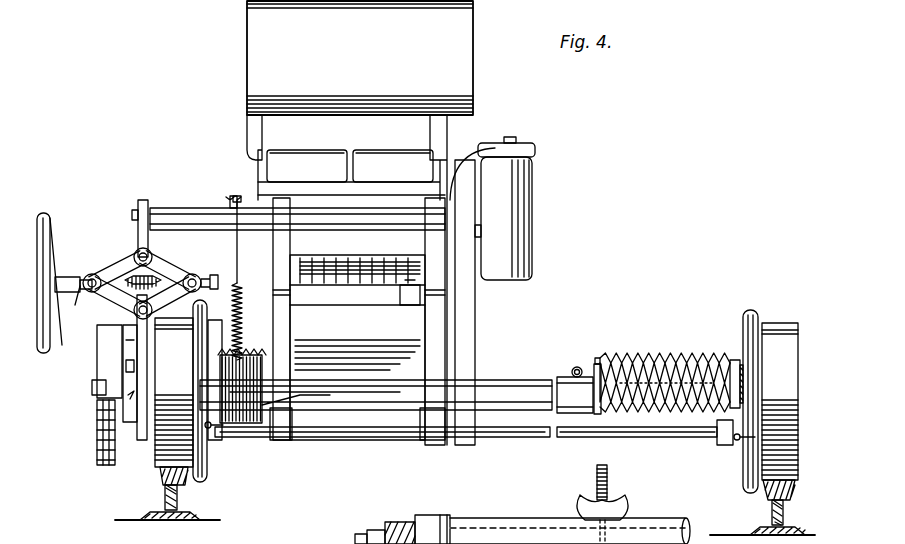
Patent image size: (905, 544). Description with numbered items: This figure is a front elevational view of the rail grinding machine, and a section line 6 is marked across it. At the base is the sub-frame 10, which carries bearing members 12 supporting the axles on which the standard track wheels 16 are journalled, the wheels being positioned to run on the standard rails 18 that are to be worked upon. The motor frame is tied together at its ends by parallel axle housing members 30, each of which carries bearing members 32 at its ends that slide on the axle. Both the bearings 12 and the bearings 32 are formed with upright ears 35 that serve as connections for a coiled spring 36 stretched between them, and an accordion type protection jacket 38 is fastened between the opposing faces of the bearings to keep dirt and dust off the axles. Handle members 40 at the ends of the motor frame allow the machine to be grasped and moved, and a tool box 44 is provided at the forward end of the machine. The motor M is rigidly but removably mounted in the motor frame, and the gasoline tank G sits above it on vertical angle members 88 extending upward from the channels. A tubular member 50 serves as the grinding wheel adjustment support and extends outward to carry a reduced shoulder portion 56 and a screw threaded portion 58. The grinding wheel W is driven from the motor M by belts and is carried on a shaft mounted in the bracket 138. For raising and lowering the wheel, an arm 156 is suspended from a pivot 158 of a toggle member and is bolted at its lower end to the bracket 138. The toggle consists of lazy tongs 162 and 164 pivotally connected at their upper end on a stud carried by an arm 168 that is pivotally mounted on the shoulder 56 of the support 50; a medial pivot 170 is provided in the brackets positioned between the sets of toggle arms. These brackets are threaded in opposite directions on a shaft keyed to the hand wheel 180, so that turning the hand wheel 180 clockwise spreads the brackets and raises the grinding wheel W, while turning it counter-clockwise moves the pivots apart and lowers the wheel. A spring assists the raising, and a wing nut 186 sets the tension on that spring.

The gasoline tank G is at (462, 52).
The motor M is at (415, 170).
The vertical angle members 88 is at (247, 123).
The tubular member 50 is at (195, 210).
The tool box 44 is at (357, 347).
The section arrow 6 is at (232, 392).
The axle housing members 30 is at (405, 410).
The bearing members 32 is at (557, 390).
The handle members 40 is at (572, 368).
The upright ears 35 is at (596, 364).
The coiled spring 36 is at (680, 360).
The accordion type protection jackets 38 is at (630, 360).
The sub-frame 10 is at (490, 437).
The bearing members 12 is at (743, 385).
The track wheels 16 is at (776, 335).
The rails 18 is at (772, 505).
The hand wheel 180 is at (50, 215).
The lazy tongs 162 is at (115, 275).
The lazy tongs 164 is at (170, 272).
The pivot 158 is at (140, 255).
The arm 168 is at (143, 212).
The medial pivot 170 is at (100, 298).
The arm 156 is at (138, 324).
The bracket 138 is at (133, 422).
The grinding wheel W is at (97, 452).
The reduced shoulder portion 56 is at (400, 522).
The screw threaded portion 58 is at (367, 540).
The wing nut 186 is at (625, 505).